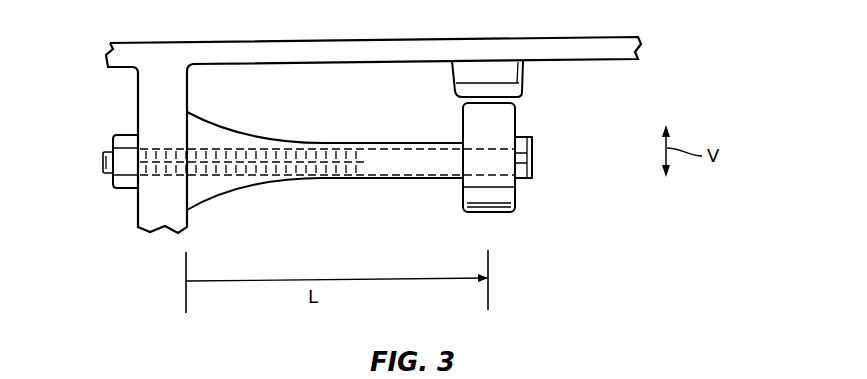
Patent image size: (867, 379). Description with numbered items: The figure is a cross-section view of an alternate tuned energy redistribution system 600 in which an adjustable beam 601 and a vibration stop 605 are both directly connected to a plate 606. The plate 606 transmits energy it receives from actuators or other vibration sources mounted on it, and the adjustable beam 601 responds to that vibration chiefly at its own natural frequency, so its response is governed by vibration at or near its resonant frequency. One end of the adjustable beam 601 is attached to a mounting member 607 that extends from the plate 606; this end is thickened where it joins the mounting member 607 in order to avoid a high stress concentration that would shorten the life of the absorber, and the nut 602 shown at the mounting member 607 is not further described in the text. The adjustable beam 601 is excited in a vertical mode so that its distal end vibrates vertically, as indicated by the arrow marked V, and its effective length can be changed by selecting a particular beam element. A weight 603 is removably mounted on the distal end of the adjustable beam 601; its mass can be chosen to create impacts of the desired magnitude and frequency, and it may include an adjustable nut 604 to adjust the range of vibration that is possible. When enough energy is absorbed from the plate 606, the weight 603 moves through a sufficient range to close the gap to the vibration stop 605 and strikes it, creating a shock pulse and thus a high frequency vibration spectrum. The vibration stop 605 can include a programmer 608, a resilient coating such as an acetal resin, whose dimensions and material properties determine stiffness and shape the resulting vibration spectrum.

The tuned energy redistribution system 600 is at (398, 146).
The adjustable beam 601 is at (401, 142).
The nut 602 is at (121, 135).
The weight 603 is at (516, 195).
The gap 604 is at (527, 104).
The vibration stop 605 is at (524, 70).
The plate 606 is at (627, 61).
The mounting member 607 is at (188, 88).
The programmer 608 is at (523, 89).